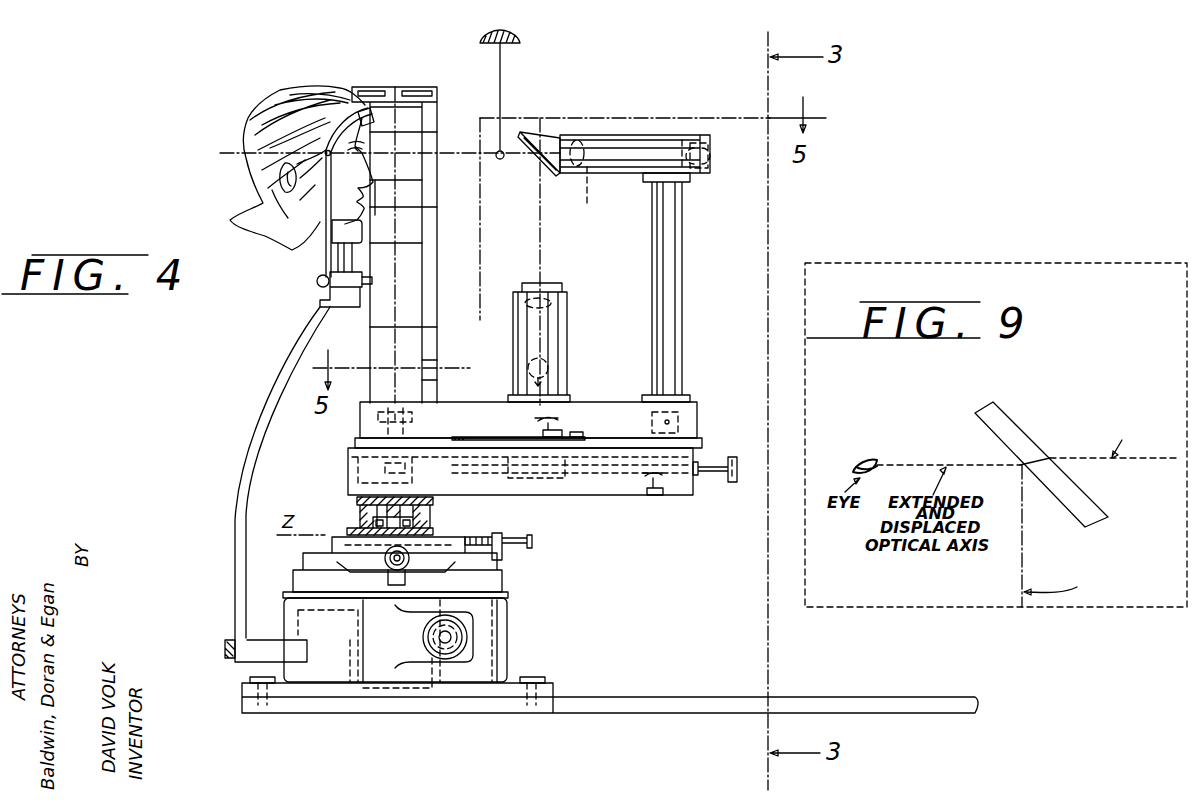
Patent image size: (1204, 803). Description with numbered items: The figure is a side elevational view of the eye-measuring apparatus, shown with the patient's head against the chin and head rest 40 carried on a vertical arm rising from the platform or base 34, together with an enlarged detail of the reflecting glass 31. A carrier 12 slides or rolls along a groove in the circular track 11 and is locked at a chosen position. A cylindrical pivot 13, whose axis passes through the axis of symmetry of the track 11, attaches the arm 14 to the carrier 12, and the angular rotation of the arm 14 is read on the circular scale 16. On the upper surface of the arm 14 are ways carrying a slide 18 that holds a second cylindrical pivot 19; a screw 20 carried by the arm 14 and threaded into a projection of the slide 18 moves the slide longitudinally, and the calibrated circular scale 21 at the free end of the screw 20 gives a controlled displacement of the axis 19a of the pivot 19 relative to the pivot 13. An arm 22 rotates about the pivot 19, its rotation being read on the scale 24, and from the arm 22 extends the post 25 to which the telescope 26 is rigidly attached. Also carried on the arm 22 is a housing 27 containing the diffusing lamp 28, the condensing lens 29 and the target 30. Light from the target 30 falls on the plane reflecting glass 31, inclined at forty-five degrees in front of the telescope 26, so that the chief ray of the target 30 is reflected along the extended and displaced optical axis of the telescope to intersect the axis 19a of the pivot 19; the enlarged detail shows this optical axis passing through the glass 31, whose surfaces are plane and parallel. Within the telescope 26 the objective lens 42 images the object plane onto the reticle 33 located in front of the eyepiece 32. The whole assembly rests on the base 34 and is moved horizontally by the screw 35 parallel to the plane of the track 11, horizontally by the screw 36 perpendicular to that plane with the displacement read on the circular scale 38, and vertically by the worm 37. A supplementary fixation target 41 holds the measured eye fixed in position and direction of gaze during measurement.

In FIG. 4, the circular track 11 is at (410, 110).
In FIG. 4, the carrier 12 is at (438, 503).
In FIG. 4, the cylindrical pivot 13 is at (407, 478).
In FIG. 4, the arm 14 is at (348, 473).
In FIG. 4, the circular scale 16 is at (662, 497).
In FIG. 4, the slide 18 is at (354, 445).
In FIG. 4, the cylindrical pivot 19 is at (403, 432).
In FIG. 4, the axis of pivot 19 19a is at (398, 302).
In FIG. 4, the screw 20 is at (715, 467).
In FIG. 4, the calibrated circular scale 21 is at (698, 483).
In FIG. 4, the arm 22 is at (692, 418).
In FIG. 4, the scale 24 is at (505, 438).
In FIG. 4, the post 25 is at (675, 290).
In FIG. 4, the telescope 26 is at (620, 173).
In FIG. 9, the telescope 26 is at (1027, 426).
In FIG. 4, the housing 27 is at (553, 322).
In FIG. 4, the diffusing lamp 28 is at (548, 368).
In FIG. 4, the condensing lens 29 is at (551, 303).
In FIG. 4, the target 30 is at (540, 284).
In FIG. 9, the target 30 is at (1091, 536).
In FIG. 4, the reflecting glass 31 is at (554, 176).
In FIG. 9, the reflecting glass 31 is at (997, 413).
In FIG. 4, the eyepiece 32 is at (700, 140).
In FIG. 4, the reticle 33 is at (682, 140).
In FIG. 4, the platform or base 34 is at (502, 610).
In FIG. 4, the screw 35 is at (397, 572).
In FIG. 4, the screw 36 is at (512, 540).
In FIG. 4, the worm 37 is at (428, 642).
In FIG. 4, the circular scale 38 is at (502, 563).
In FIG. 4, the chin and head rest 40 is at (303, 321).
In FIG. 4, the supplementary fixation target 41 is at (500, 159).
In FIG. 4, the objective lens 42 is at (579, 183).